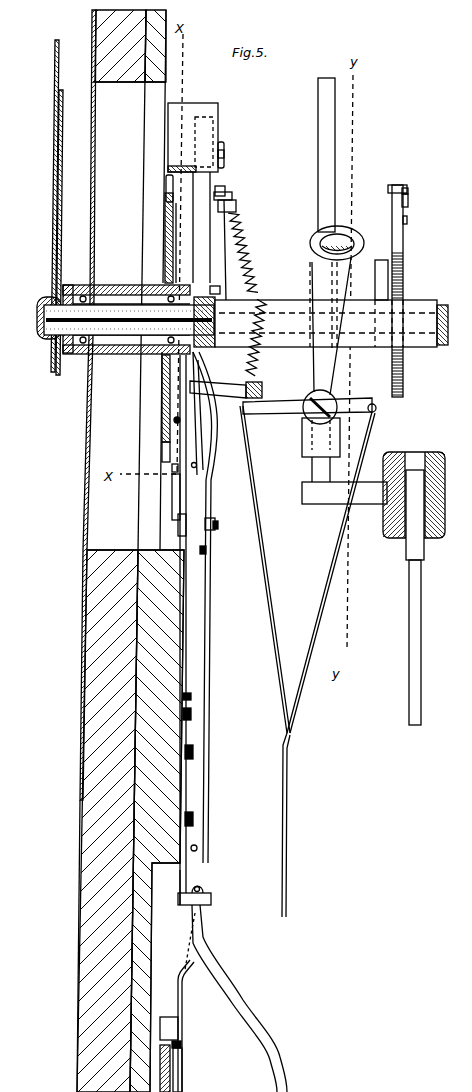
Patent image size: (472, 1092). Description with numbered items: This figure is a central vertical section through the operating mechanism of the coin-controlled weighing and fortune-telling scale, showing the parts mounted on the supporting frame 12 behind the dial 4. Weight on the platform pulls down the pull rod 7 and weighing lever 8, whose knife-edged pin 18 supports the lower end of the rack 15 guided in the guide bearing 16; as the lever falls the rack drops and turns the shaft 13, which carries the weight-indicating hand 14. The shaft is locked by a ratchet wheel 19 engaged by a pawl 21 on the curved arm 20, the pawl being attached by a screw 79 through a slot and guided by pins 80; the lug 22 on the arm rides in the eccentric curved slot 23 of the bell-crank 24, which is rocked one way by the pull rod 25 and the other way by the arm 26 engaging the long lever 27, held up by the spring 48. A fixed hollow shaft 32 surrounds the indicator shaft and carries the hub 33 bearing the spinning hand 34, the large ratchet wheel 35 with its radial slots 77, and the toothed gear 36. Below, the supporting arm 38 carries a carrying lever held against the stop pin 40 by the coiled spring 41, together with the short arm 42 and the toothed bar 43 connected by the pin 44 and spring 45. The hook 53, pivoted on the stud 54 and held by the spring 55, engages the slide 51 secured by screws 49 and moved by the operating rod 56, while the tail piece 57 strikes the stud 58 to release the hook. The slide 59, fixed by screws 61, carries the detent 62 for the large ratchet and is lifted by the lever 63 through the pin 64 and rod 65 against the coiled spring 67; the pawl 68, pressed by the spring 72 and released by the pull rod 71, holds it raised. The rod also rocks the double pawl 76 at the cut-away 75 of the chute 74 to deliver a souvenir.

The dial 4 is at (92, 196).
The pull rod 7 is at (421, 658).
The weighing lever 8 is at (445, 500).
The supporting frame 12 is at (415, 300).
The shaft 13 is at (37, 316).
The pointer or hand 14 is at (47, 66).
The rack 15 is at (324, 78).
The guide bearing 16 is at (340, 437).
The pin 18 is at (315, 507).
The ratchet wheel 19 is at (405, 269).
The curved arm 20 is at (392, 185).
The pawl 21 is at (409, 200).
The projecting lug 22 is at (322, 246).
The curved slot 23 is at (330, 232).
The bell-crank 24 is at (332, 274).
The pull rod 25 is at (299, 700).
The arm 26 is at (300, 416).
The long lever 27 is at (264, 394).
The hollow shaft 32 is at (133, 354).
The hub 33 is at (120, 290).
The hand or pointer 34 is at (62, 93).
The large ratchet wheel 35 is at (168, 222).
The toothed gear 36 is at (176, 272).
The supporting arm 38 is at (196, 466).
The stop pin 40 is at (203, 474).
The coiled spring 41 is at (176, 420).
The short arm 42 is at (180, 522).
The toothed bar 43 is at (172, 483).
The pin 44 is at (178, 394).
The coiled spring 45 is at (172, 468).
The spring 48 is at (264, 352).
The screws 49 is at (194, 818).
The slide 51 is at (190, 852).
The hook 53 is at (190, 605).
The stud 54 is at (218, 526).
The coiled spring 55 is at (207, 550).
The operating rod 56 is at (228, 990).
The tail piece 57 is at (192, 697).
The stud 58 is at (192, 715).
The slide 59 is at (205, 107).
The screws 61 is at (226, 146).
The detent 62 is at (225, 153).
The lever 63 is at (229, 186).
The pin 64 is at (232, 197).
The rod 65 is at (226, 272).
The coiled spring 67 is at (240, 232).
The pawl 68 is at (254, 250).
The pull rod 71 is at (268, 584).
The spring 72 is at (220, 292).
The chute 74 is at (158, 1060).
The cut-away 75 is at (182, 1072).
The double pawl 76 is at (181, 1044).
The radial slots 77 is at (167, 190).
The screw 79 is at (408, 190).
The pins 80 is at (407, 222).